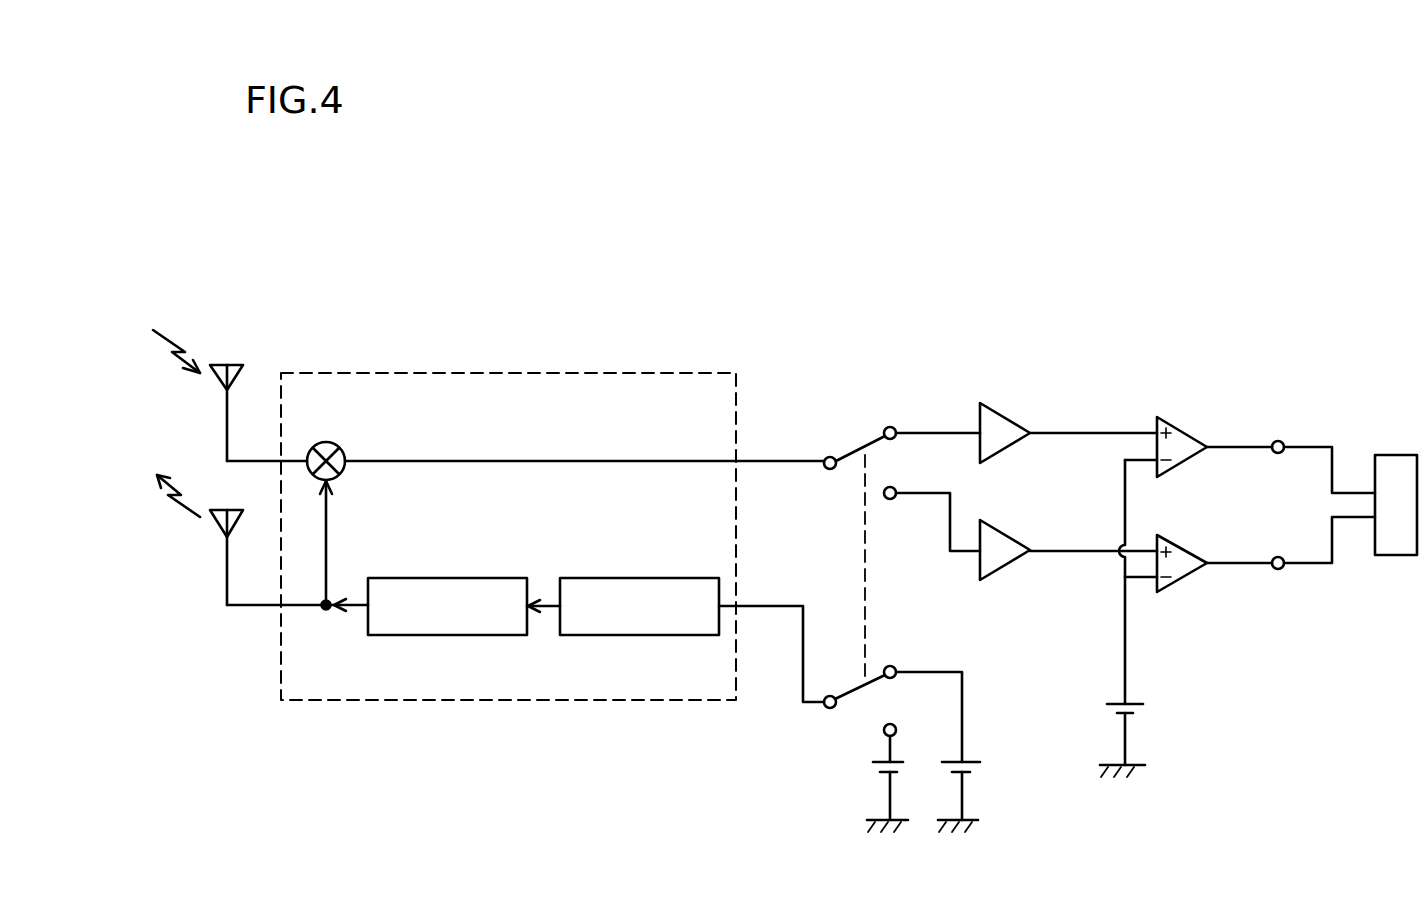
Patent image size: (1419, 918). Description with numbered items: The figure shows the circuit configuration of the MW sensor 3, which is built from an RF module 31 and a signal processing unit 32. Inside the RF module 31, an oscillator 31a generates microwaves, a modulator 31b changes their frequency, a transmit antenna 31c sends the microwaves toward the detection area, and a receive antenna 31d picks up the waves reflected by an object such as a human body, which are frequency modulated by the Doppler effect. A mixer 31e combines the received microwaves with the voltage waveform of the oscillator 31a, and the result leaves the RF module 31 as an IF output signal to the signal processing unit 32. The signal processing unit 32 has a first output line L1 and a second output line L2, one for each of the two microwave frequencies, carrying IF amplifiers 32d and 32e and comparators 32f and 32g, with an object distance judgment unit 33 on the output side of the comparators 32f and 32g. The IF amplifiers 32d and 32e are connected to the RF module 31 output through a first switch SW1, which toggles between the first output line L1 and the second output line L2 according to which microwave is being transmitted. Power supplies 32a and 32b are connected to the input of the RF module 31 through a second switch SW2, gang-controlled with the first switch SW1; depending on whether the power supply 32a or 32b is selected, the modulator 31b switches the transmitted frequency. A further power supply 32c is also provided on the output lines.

The MW sensor 3 is at (203, 216).
The RF module 31 is at (588, 370).
The oscillator 31a is at (442, 578).
The modulator 31b is at (620, 578).
The transmit antenna 31c is at (217, 527).
The receive antenna 31d is at (234, 365).
The mixer 31e is at (340, 446).
The signal processing unit 32 is at (937, 307).
The power supply 32a is at (975, 758).
The power supply 32b is at (877, 758).
The power supply 32c is at (1135, 702).
The IF amplifier 32d is at (1003, 417).
The IF amplifier 32e is at (1003, 565).
The comparator 32f is at (1187, 435).
The comparator 32g is at (1175, 582).
The object distance judgment unit 33 is at (1398, 455).
The first switch SW1 is at (853, 447).
The second switch SW2 is at (855, 700).
The first output line L1 is at (1090, 430).
The second output line L2 is at (1078, 549).